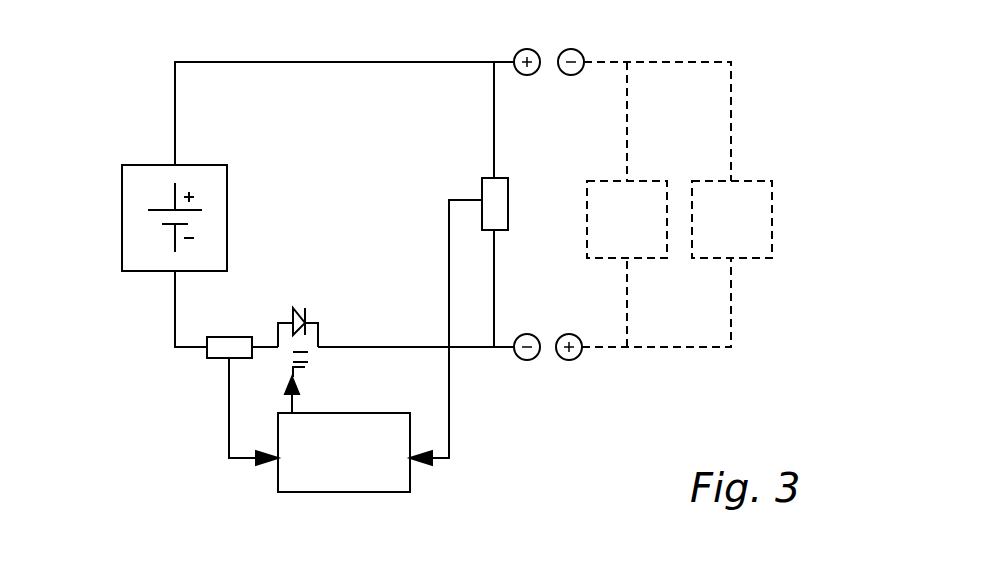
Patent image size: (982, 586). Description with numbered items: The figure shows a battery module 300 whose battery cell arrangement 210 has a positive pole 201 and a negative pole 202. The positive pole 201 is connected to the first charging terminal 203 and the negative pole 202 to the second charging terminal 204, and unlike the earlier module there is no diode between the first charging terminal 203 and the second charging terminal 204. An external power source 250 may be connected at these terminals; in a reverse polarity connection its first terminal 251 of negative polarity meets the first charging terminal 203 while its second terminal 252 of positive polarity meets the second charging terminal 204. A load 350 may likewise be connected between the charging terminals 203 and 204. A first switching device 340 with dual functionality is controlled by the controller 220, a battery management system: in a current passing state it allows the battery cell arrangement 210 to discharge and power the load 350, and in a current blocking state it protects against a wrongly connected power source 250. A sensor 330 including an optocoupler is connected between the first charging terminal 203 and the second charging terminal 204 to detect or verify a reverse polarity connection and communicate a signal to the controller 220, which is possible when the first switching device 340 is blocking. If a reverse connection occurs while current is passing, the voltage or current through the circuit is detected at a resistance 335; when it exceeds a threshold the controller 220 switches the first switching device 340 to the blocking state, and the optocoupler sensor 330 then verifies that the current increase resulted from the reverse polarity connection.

The positive pole 201 is at (173, 162).
The negative pole 202 is at (173, 273).
The first charging terminal 203 is at (527, 49).
The second charging terminal 204 is at (527, 360).
The battery cell arrangement 210 is at (122, 222).
The controller 220 is at (365, 492).
The power source 250 is at (642, 258).
The first terminal 251 is at (576, 50).
The second terminal 252 is at (572, 360).
The battery module 300 is at (128, 424).
The sensor 330 is at (508, 178).
The resistance 335 is at (219, 358).
The first switching device 340 is at (312, 358).
The load 350 is at (747, 258).